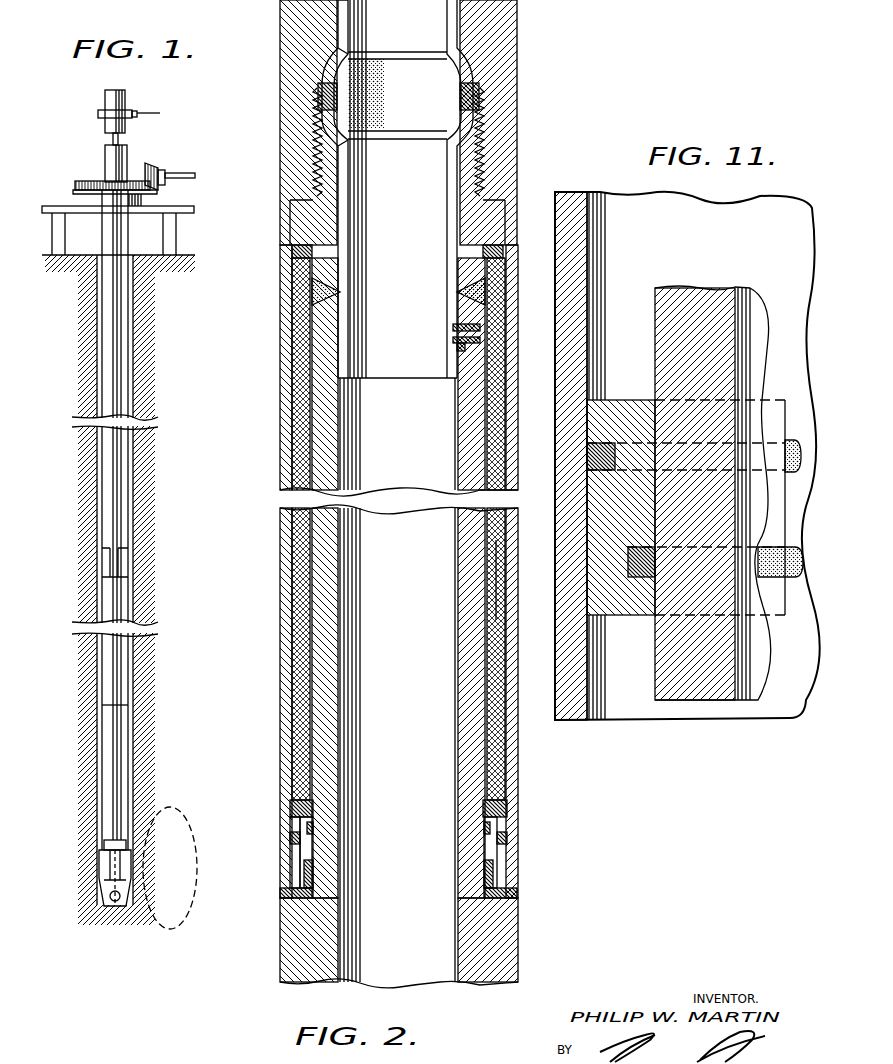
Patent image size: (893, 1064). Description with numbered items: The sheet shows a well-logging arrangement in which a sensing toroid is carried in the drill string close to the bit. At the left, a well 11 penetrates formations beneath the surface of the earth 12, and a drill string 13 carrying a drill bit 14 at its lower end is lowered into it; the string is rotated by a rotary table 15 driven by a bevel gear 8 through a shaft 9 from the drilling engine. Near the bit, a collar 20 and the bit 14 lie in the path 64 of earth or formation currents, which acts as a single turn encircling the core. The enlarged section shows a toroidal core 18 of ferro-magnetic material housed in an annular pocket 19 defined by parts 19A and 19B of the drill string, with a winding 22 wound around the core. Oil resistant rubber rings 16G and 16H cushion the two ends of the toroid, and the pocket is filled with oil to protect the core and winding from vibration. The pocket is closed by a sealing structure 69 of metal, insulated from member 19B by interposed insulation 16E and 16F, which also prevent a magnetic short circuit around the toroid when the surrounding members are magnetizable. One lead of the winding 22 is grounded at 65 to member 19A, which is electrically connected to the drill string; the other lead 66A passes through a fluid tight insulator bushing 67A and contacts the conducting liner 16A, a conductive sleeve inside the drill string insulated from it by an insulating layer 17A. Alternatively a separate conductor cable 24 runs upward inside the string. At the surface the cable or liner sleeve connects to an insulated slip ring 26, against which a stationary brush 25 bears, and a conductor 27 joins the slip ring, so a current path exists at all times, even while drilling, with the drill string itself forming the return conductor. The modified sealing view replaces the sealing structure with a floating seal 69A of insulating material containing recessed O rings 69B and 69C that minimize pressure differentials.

In FIG. 1, the bevel gear 8 is at (160, 184).
In FIG. 1, the shaft 9 is at (178, 172).
In FIG. 1, the well 11 is at (150, 358).
In FIG. 1, the surface of the earth 12 is at (178, 255).
In FIG. 1, the drill string 13 is at (118, 500).
In FIG. 2, the drill string 13 is at (520, 928).
In FIG. 1, the drill bit 14 is at (124, 888).
In FIG. 1, the rotary table 15 is at (90, 202).
In FIG. 2, the inner conducting liner 16A is at (340, 16).
In FIG. 2, the insulation 16E is at (483, 872).
In FIG. 2, the insulation 16F is at (518, 896).
In FIG. 2, the oil resistant rubber ring 16G is at (298, 254).
In FIG. 2, the oil resistant rubber ring 16H is at (290, 808).
In FIG. 2, the insulating layer 17A is at (455, 140).
In FIG. 2, the toroidal core 18 is at (493, 545).
In FIG. 2, the annular pocket 19 is at (500, 432).
In FIG. 2, the part of drill string 19A is at (508, 284).
In FIG. 2, the part of drill string 19B is at (460, 468).
In FIG. 11, the part of drill string 19B is at (704, 680).
In FIG. 1, the collar 20 is at (106, 862).
In FIG. 2, the winding 22 is at (497, 603).
In FIG. 1, the conductor cable 24 is at (112, 140).
In FIG. 1, the stationary brush 25 is at (137, 113).
In FIG. 1, the insulated slip ring 26 is at (98, 113).
In FIG. 1, the conductor 27 is at (160, 113).
In FIG. 1, the path 64 is at (174, 808).
In FIG. 2, the grounded connection 65 is at (505, 322).
In FIG. 2, the lead of the coil 66A is at (460, 326).
In FIG. 2, the insulator bushing 67A is at (452, 350).
In FIG. 2, the sealing structure 69 is at (507, 865).
In FIG. 2, the floating seal 69A is at (300, 850).
In FIG. 11, the floating seal 69A is at (607, 598).
In FIG. 11, the O ring 69B is at (601, 445).
In FIG. 11, the O ring 69C is at (642, 580).